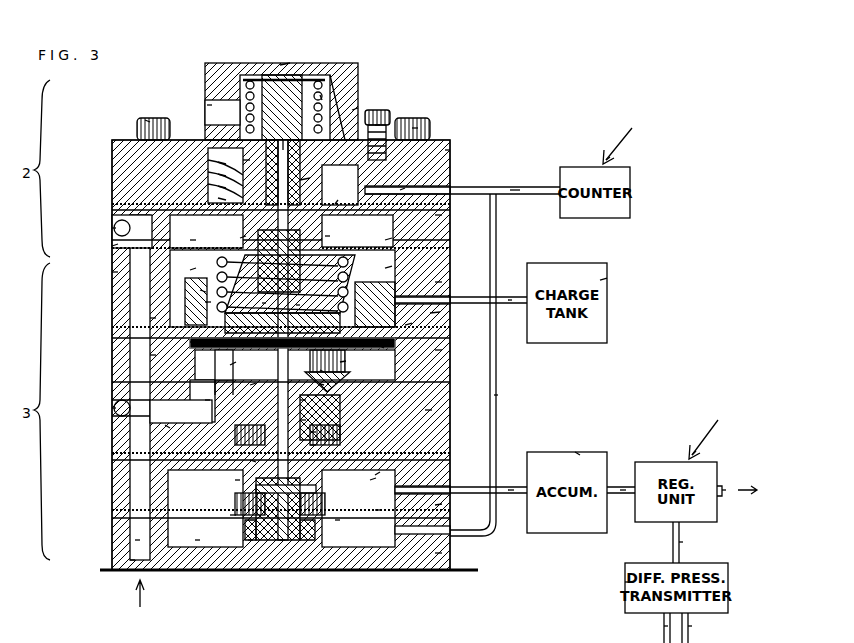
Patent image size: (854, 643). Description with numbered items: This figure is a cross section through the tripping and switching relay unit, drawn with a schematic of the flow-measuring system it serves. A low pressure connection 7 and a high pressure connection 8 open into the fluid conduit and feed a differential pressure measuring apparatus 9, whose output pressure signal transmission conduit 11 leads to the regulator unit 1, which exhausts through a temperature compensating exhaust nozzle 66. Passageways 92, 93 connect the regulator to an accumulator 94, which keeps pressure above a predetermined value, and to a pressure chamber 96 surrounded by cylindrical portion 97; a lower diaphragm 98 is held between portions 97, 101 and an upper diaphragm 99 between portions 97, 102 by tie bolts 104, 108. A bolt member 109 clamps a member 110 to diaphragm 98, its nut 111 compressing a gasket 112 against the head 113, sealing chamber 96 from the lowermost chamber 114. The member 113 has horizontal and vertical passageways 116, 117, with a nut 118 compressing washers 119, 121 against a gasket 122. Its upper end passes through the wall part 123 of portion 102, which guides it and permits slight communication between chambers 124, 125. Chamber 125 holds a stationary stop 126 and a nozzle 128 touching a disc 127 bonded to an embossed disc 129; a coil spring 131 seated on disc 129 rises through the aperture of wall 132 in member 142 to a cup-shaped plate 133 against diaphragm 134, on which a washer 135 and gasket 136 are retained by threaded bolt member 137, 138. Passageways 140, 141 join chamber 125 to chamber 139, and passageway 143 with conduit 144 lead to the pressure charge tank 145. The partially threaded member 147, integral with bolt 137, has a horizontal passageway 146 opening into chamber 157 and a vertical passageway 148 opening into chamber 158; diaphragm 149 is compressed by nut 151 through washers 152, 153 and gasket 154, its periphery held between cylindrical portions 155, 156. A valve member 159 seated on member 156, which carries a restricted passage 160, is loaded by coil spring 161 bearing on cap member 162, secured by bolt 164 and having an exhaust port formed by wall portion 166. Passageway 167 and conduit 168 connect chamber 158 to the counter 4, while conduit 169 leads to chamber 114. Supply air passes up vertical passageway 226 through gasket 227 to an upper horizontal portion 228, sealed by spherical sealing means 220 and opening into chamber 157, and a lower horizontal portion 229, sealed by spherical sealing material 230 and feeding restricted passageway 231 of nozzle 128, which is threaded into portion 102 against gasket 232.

The regulator unit 1 is at (707, 430).
The counter 4 is at (621, 135).
The low pressure connection 7 is at (664, 626).
The high pressure connection 8 is at (688, 626).
The differential pressure measuring apparatus 9 is at (625, 582).
The output pressure signal transmission conduit 11 is at (681, 542).
The temperature compensating exhaust nozzle 66 is at (724, 490).
The passageway 92 is at (622, 488).
The passageway 93 is at (510, 488).
The accumulator 94 is at (578, 452).
The pressure chamber 96 is at (375, 475).
The cylindrical portion 97 is at (438, 505).
The diaphragm 98 is at (376, 510).
The second diaphragm 99 is at (370, 480).
The cylindrical portion 101 is at (438, 553).
The cylindrical portion 102 is at (428, 410).
The tie bolt 104 is at (414, 128).
The tie bolt 108 is at (145, 120).
The bolt member 109 is at (282, 540).
The diaphragm clamping member 110 is at (337, 520).
The nut 111 is at (250, 540).
The gasket 112 is at (230, 515).
The member 113 is at (250, 460).
The lowermost chamber 114 is at (195, 540).
The horizontal passageway 116 is at (235, 480).
The vertical passageway 117 is at (252, 385).
The nut 118 is at (303, 400).
The washer 119 is at (303, 420).
The washer 121 is at (313, 432).
The gasket 122 is at (313, 445).
The wall part 123 is at (322, 371).
The chamber 124 is at (322, 385).
The chamber 125 is at (438, 350).
The stationary stop 126 is at (343, 362).
The disc 127 is at (380, 346).
The nozzle 128 is at (150, 355).
The embossed disc 129 is at (190, 342).
The coil spring 131 is at (150, 318).
The wall 132 is at (205, 302).
The cup-shaped plate 133 is at (114, 272).
The diaphragm 134 is at (192, 270).
The washer 135 is at (327, 236).
The gasket 136 is at (192, 240).
The threaded bolt member 137 is at (296, 305).
The threaded bolt member 138 is at (262, 303).
The chamber 139 is at (388, 267).
The passageway 140 is at (408, 324).
The passageway 141 is at (200, 290).
The member 142 is at (438, 282).
The passageway 143 is at (435, 312).
The conduit 144 is at (510, 298).
The pressure charge tank 145 is at (605, 280).
The horizontal passageway 146 is at (243, 238).
The partially threaded member 147 is at (305, 179).
The vertical passageway 148 is at (283, 140).
The diaphragm 149 is at (337, 204).
The nut 151 is at (218, 162).
The washer 152 is at (218, 174).
The washer 153 is at (218, 186).
The gasket 154 is at (218, 198).
The cylindrical portion 155 is at (438, 215).
The cylindrical portion 156 is at (448, 150).
The chamber 157 is at (388, 239).
The chamber 158 is at (243, 160).
The valve member 159 is at (318, 82).
The restricted passage 160 is at (352, 110).
The coil spring 161 is at (322, 98).
The cap member 162 is at (280, 65).
The bolt 164 is at (378, 125).
The wall portion 166 is at (208, 105).
The passageway 167 is at (402, 190).
The conduit 168 is at (520, 190).
The conduit 169 is at (497, 395).
The spherical sealing means 220 is at (112, 228).
The vertical passageway 226 is at (135, 540).
The gasket 227 is at (130, 560).
The upper horizontal portion 228 is at (112, 246).
The lower horizontal portion 229 is at (165, 425).
The spherical sealing material 230 is at (112, 408).
The restricted passageway 231 is at (205, 400).
The gasket 232 is at (233, 364).